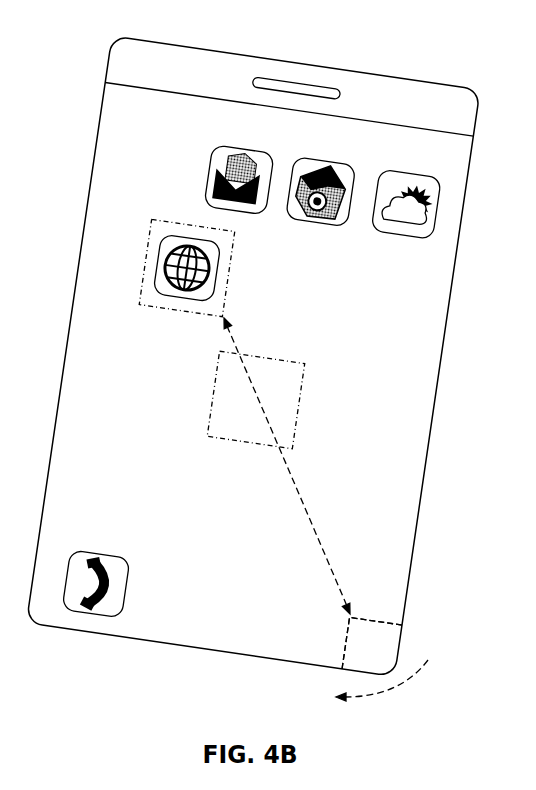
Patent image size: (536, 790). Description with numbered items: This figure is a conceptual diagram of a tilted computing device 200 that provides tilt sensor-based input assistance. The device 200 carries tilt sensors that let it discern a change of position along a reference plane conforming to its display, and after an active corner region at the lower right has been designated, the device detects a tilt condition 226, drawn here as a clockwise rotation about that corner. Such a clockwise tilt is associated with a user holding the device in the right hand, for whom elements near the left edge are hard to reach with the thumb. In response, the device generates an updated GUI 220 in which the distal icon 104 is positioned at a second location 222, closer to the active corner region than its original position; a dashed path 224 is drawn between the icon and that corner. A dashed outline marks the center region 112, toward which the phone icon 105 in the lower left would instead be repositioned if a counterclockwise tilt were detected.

The computing device 200 is at (267, 356).
The distal icon 104 is at (157, 232).
The second location 222 is at (146, 268).
The center region 112 is at (215, 402).
The updated GUI 220 is at (416, 347).
The icon movement path 224 is at (322, 548).
The tilt condition 226 is at (407, 683).
The phone icon 105 is at (72, 617).